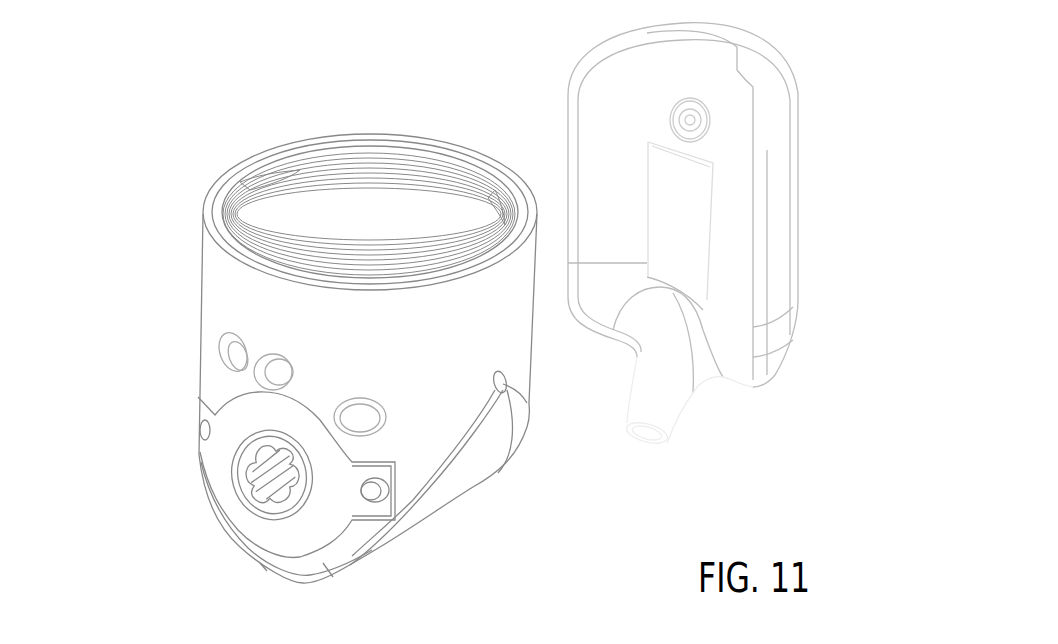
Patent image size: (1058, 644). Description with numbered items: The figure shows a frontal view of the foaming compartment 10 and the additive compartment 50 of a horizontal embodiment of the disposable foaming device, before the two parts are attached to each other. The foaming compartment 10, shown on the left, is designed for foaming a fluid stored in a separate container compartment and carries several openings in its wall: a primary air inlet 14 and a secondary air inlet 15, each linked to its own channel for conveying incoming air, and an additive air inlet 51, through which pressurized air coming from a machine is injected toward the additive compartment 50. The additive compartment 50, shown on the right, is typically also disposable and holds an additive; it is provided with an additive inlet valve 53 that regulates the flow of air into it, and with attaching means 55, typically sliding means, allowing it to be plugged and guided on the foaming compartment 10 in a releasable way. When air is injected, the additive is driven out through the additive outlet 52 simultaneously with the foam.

The foaming compartment 10 is at (213, 257).
The additive air inlet 51 is at (225, 347).
The primary air inlet 14 is at (247, 373).
The secondary air inlet 15 is at (360, 417).
The additive compartment 50 is at (590, 73).
The additive inlet valve 53 is at (690, 117).
The attaching means 55 is at (680, 200).
The additive outlet 52 is at (662, 408).